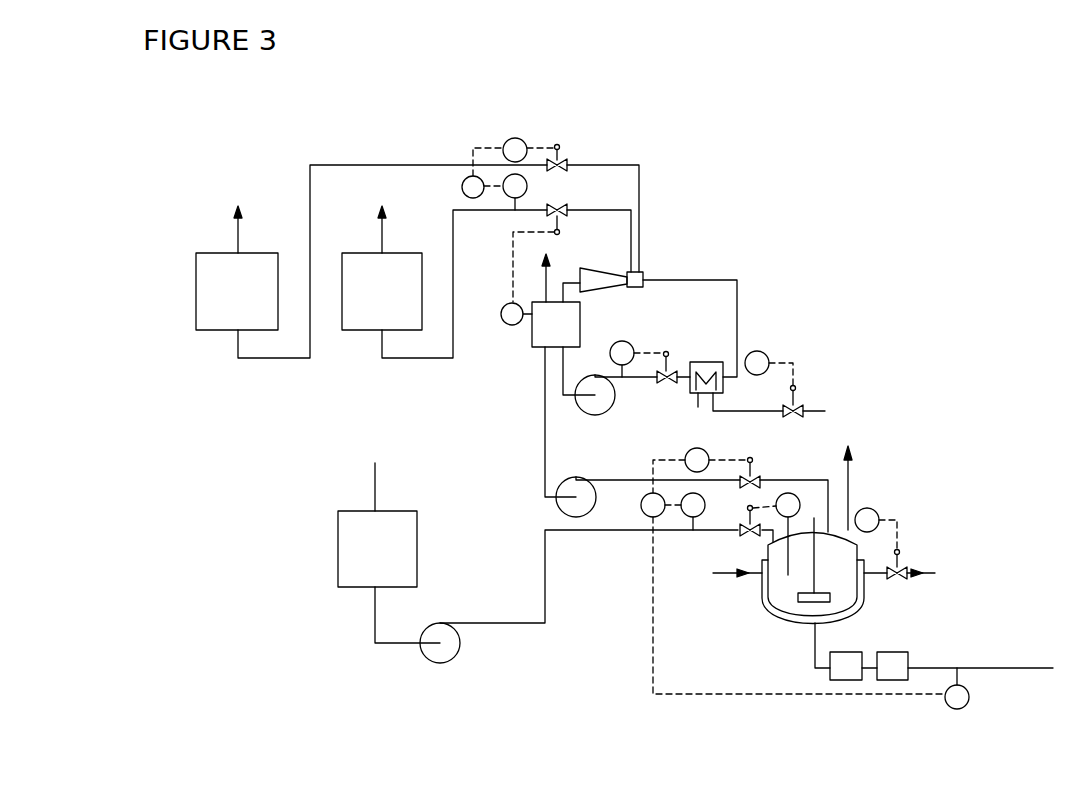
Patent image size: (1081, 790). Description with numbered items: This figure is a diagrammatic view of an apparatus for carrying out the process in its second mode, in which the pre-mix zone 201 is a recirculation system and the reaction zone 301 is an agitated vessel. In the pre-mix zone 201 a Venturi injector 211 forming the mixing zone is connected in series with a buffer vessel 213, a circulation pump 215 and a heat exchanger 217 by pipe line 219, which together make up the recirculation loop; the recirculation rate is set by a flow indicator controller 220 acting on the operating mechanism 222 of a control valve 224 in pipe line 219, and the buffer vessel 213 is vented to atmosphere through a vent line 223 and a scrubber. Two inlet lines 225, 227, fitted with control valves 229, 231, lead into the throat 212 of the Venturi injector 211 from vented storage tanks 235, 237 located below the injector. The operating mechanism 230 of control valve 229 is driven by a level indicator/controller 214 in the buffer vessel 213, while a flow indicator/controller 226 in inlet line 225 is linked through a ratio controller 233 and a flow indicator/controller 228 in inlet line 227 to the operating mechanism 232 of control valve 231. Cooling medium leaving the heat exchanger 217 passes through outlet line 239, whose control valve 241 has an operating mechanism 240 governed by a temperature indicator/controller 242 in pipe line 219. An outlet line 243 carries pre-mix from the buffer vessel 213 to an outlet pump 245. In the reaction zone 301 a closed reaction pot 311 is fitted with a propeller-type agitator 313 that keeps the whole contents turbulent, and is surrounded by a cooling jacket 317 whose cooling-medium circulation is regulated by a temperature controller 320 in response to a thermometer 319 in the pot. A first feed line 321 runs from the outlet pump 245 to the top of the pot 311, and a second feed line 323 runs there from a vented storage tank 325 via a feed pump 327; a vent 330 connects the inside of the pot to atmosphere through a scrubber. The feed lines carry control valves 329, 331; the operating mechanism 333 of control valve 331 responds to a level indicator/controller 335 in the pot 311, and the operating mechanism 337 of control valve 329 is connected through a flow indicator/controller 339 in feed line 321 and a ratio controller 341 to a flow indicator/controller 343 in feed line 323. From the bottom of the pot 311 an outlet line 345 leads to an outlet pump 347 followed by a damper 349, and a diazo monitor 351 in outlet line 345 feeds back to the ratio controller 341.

The pre-mix zone 201 is at (760, 275).
The Venturi injector 211 is at (606, 273).
The throat of the Venturi injector 212 is at (641, 273).
The buffer vessel 213 is at (533, 335).
The level indicator/controller 214 is at (502, 315).
The circulation pump 215 is at (588, 396).
The heat exchanger 217 is at (708, 368).
The pipe line 219 is at (713, 279).
The flow indicator controller 220 is at (622, 341).
The operating mechanism 222 is at (667, 352).
The vent line 223 is at (550, 270).
The control valve 224 is at (669, 382).
The inlet line 225 is at (453, 250).
The flow indicator/controller 226 is at (505, 177).
The inlet line 227 is at (337, 162).
The flow indicator/controller 228 is at (515, 138).
The control valve 229 is at (567, 210).
The operating mechanism 230 is at (560, 231).
The control valve 231 is at (567, 165).
The operating mechanism 232 is at (558, 145).
The ratio controller 233 is at (461, 178).
The vented storage tank 235 is at (367, 332).
The vented storage tank 237 is at (220, 330).
The cooling medium outlet line 239 is at (863, 386).
The operating mechanism 240 is at (793, 387).
The control valve 241 is at (802, 412).
The temperature indicator/controller 242 is at (767, 355).
The outlet line 243 is at (545, 436).
The outlet pump 245 is at (556, 503).
The reaction zone 301 is at (966, 474).
The reaction pot 311 is at (790, 605).
The propeller-type agitator 313 is at (823, 601).
The cooling jacket 317 is at (762, 598).
The thermometer 319 is at (855, 583).
The jacket temperature controller 320 is at (878, 511).
The first feed line 321 is at (828, 507).
The second feed line 323 is at (612, 532).
The vented storage tank 325 is at (338, 552).
The feed pump 327 is at (459, 648).
The control valve 329 is at (758, 479).
The vent 330 is at (851, 468).
The control valve 331 is at (757, 531).
The operating mechanism 333 is at (688, 544).
The level indicator/controller 335 is at (795, 498).
The operating mechanism 337 is at (752, 461).
The flow indicator/controller 339 is at (705, 452).
The ratio controller 341 is at (645, 496).
The flow indicator/controller 343 is at (685, 499).
The outlet line 345 is at (980, 667).
The outlet pump 347 is at (850, 676).
The damper 349 is at (897, 670).
The diazo monitor 351 is at (963, 706).